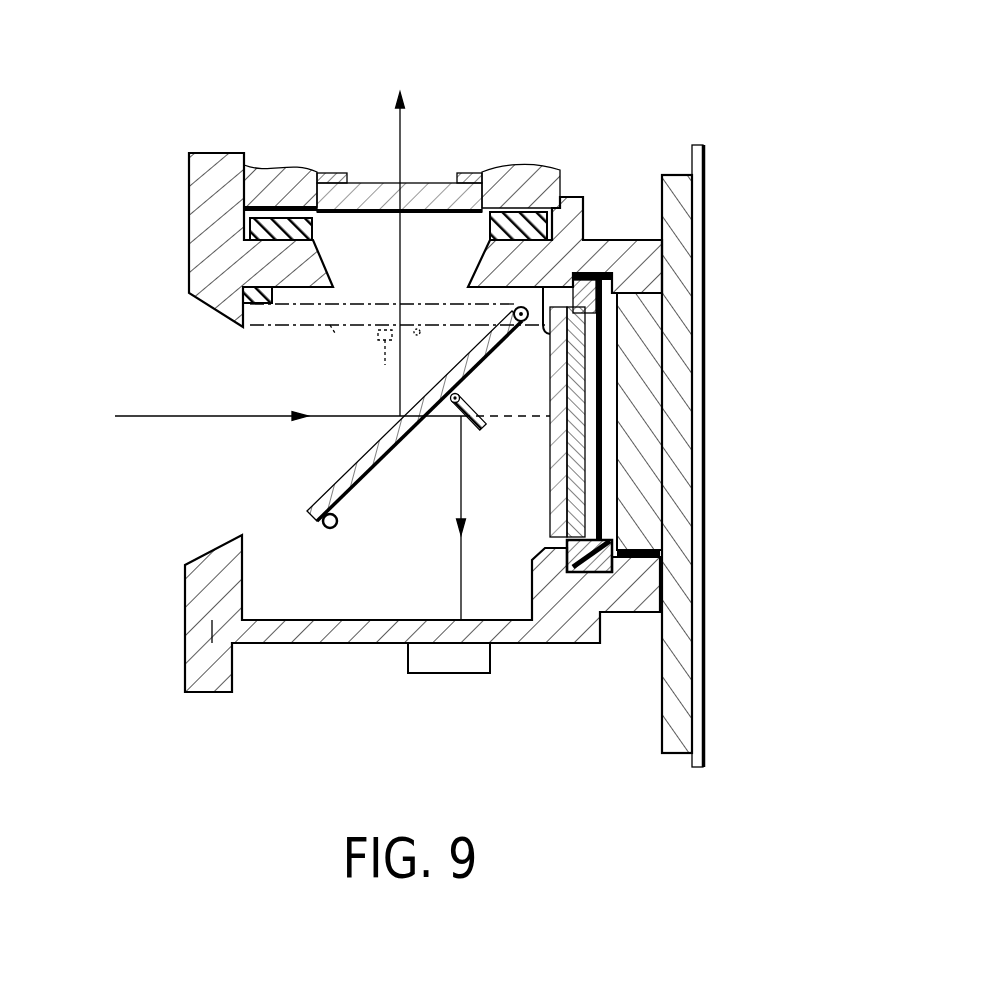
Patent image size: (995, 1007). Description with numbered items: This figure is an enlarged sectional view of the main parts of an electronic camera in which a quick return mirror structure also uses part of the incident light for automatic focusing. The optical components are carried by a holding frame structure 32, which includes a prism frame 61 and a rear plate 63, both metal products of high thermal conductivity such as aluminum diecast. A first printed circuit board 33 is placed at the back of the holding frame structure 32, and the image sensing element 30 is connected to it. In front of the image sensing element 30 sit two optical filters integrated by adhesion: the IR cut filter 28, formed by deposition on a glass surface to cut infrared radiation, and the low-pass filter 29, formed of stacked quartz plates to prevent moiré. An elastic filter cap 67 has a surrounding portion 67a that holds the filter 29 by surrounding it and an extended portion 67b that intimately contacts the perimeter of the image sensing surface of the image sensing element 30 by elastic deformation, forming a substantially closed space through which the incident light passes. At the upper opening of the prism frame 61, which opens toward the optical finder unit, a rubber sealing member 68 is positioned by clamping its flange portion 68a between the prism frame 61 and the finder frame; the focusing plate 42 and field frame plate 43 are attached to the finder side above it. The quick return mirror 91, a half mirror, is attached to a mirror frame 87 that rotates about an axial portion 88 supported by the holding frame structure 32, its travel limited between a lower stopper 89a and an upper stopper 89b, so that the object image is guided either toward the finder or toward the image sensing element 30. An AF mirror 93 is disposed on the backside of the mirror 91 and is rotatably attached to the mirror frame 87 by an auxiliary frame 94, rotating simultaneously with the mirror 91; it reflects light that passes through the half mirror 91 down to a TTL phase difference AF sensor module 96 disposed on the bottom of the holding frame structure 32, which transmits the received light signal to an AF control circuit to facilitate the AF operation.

The holding frame structure 32 is at (186, 96).
The prism frame 61 is at (236, 153).
The rear plate 63 is at (678, 212).
The field frame plate 43 is at (340, 176).
The focusing plate 42 is at (425, 192).
The sealing member 68 is at (490, 228).
The flange portion 68a is at (313, 228).
The filter cap 67 is at (612, 279).
The surrounding portion 67a is at (603, 612).
The extended portion 67b is at (590, 542).
The first printed circuit board 33 is at (702, 352).
The low-pass filter 29 is at (587, 410).
The image sensing element 30 is at (650, 453).
The IR cut filter 28 is at (550, 510).
The axial portion 88 is at (522, 323).
The mirror frame 87 is at (395, 455).
The lower stopper 89a is at (330, 530).
The upper stopper 89b is at (238, 300).
The quick return mirror 91 is at (333, 335).
The AF mirror 93 is at (474, 450).
The auxiliary frame 94 is at (468, 410).
The phase difference AF sensor module 96 is at (466, 673).